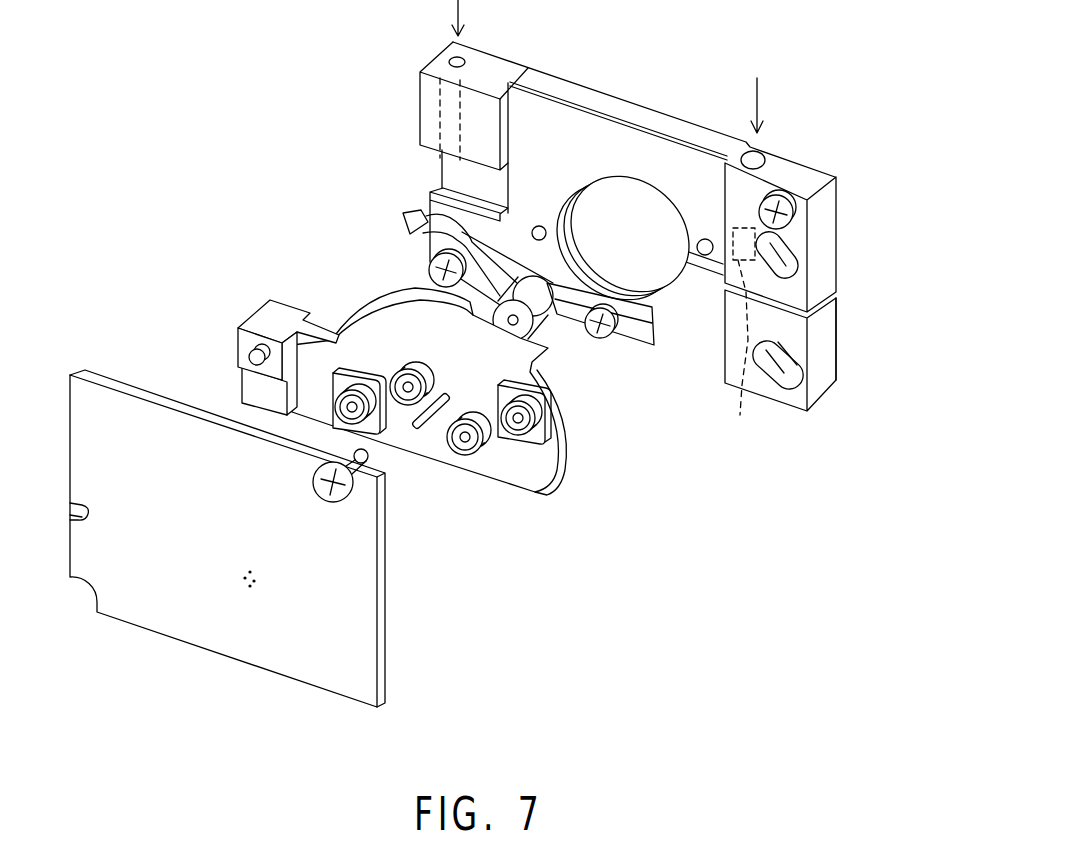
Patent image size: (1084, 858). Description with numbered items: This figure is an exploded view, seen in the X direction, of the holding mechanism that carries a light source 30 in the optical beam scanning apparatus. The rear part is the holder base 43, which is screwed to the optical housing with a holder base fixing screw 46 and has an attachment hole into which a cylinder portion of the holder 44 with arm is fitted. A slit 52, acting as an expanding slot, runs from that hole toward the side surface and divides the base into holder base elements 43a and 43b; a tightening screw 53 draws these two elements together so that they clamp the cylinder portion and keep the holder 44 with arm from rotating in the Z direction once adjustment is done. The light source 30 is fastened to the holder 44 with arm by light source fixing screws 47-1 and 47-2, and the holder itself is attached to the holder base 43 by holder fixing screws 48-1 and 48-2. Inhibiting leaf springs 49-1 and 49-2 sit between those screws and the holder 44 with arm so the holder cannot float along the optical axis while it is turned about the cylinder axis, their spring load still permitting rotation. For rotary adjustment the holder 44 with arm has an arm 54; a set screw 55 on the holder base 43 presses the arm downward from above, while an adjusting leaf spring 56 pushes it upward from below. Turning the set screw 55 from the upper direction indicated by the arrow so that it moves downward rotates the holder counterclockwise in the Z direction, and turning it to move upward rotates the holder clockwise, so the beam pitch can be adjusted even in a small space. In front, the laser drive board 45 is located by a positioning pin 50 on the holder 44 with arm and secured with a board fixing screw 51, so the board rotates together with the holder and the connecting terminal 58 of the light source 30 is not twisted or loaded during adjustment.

The light source 30 is at (448, 393).
The holder base 43 is at (834, 287).
The holder base element 43a is at (833, 272).
The holder base element 43b is at (833, 308).
The holder with arm 44 is at (562, 458).
The laser drive board 45 is at (385, 655).
The holder base fixing screw 46 is at (778, 198).
The light source fixing screw 47-1 is at (468, 455).
The light source fixing screw 47-2 is at (403, 408).
The holder fixing screw 48-1 is at (532, 408).
The holder fixing screw 48-2 is at (340, 398).
The inhibiting leaf spring 49-1 is at (542, 420).
The inhibiting leaf spring 49-2 is at (360, 390).
The positioning pin 50 is at (250, 356).
The board fixing screw 51 is at (338, 502).
The slit 52 is at (832, 322).
The tightening screw 53 is at (742, 339).
The arm 54 is at (265, 312).
The set screw 55 is at (440, 115).
The adjusting leaf spring 56 is at (412, 214).
The connecting terminal 58 is at (435, 428).